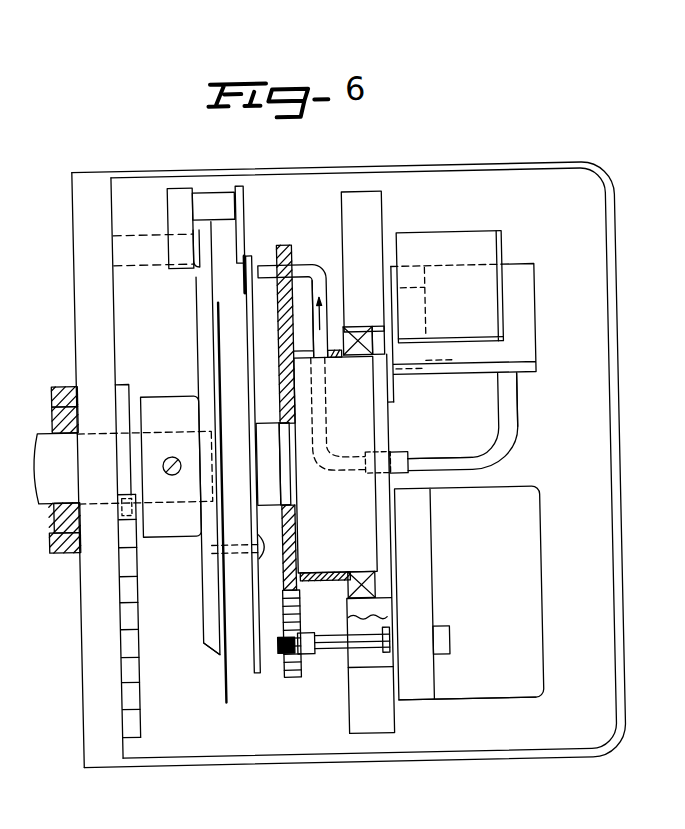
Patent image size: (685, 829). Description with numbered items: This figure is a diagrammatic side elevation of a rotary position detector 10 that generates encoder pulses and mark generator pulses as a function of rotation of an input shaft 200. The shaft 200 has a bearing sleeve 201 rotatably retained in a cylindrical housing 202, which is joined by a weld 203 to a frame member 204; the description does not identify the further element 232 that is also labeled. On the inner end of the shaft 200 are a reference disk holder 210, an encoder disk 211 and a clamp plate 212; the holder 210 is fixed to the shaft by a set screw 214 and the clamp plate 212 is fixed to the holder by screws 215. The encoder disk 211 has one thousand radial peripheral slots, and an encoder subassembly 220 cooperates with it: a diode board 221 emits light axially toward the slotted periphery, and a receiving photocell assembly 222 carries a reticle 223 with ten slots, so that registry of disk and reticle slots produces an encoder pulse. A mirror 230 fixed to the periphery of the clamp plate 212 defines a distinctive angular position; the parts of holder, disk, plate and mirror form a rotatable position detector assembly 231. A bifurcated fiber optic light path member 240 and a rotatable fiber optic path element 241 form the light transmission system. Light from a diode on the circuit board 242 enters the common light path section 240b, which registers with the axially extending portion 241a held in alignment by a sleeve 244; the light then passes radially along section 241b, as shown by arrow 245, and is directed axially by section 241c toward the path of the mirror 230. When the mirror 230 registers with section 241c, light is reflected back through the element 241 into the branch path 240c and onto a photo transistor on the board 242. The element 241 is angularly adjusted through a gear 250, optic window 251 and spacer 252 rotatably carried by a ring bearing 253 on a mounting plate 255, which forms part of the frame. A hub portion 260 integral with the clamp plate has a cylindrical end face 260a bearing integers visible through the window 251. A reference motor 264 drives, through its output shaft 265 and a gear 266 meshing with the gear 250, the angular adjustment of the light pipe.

The position detector 10 is at (459, 165).
The housing cover 232 is at (618, 189).
The frame member 204 is at (88, 206).
The receiving photocell assembly 222 is at (150, 228).
The encoder subassembly 220 is at (253, 195).
The diode board 221 is at (251, 234).
The reticle 223 is at (204, 265).
The mirror 230 is at (262, 258).
The clamp plate 212 is at (250, 660).
The reference disk holder 210 is at (161, 519).
The encoder disk 211 is at (218, 699).
The rotatable position detector assembly 231 is at (194, 659).
The screws 215 is at (264, 555).
The set screw 214 is at (175, 453).
The weld 203 is at (127, 375).
The input shaft 200 is at (70, 450).
The bearing sleeve 201 is at (62, 549).
The cylindrical housing 202 is at (64, 377).
The axially directed section 241c is at (302, 261).
The rotatable fiber optic path element 241 is at (326, 272).
The radial section 241b is at (331, 292).
The arrow 245 is at (321, 322).
The mounting plate 255 is at (393, 193).
The axially extending portion 241a is at (349, 455).
The spacer 252 is at (316, 581).
The ring bearing 253 is at (361, 572).
The gear 266 is at (297, 617).
The output shaft 265 is at (329, 643).
The gear 250 is at (298, 679).
The hub portion 260 is at (275, 484).
The cylindrical end face 260a is at (290, 457).
The sleeve 244 is at (402, 453).
The bifurcated fiber optic light path member 240 is at (520, 414).
The common light path section 240b is at (423, 460).
The branch path 240c is at (520, 396).
The circuit board 242 is at (539, 371).
The optic window 251 is at (364, 510).
The reference motor 264 is at (488, 703).